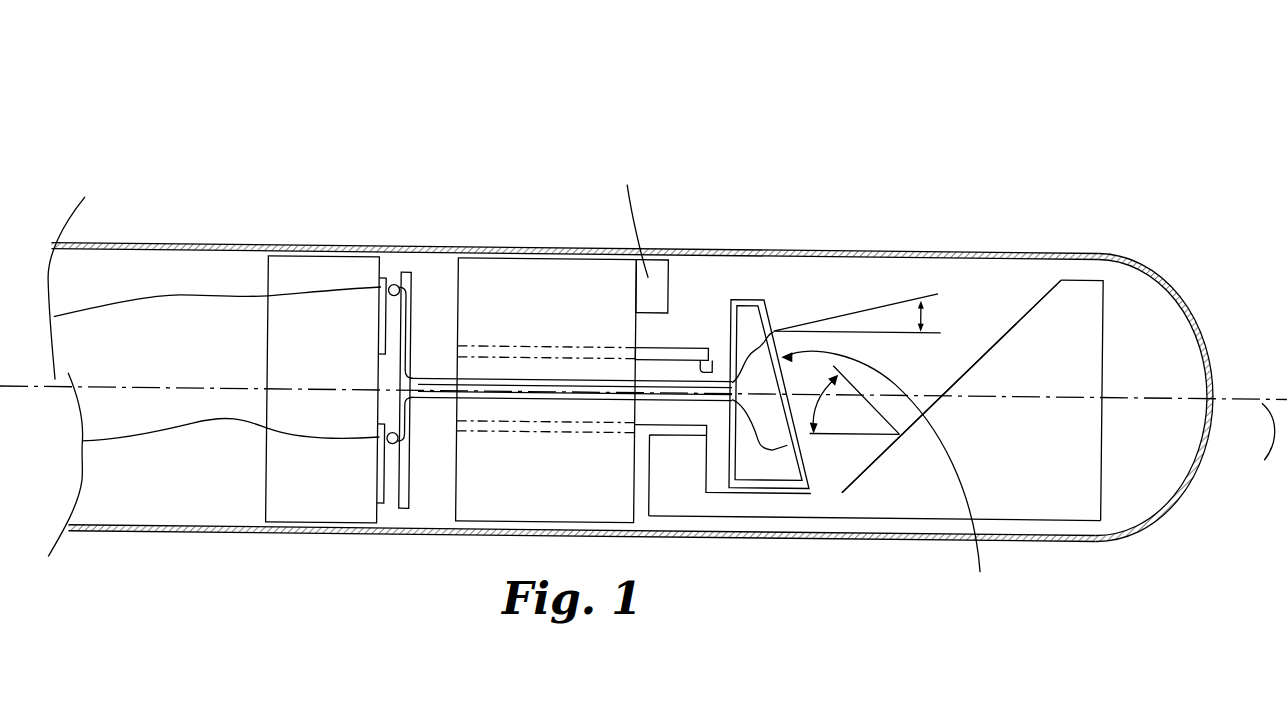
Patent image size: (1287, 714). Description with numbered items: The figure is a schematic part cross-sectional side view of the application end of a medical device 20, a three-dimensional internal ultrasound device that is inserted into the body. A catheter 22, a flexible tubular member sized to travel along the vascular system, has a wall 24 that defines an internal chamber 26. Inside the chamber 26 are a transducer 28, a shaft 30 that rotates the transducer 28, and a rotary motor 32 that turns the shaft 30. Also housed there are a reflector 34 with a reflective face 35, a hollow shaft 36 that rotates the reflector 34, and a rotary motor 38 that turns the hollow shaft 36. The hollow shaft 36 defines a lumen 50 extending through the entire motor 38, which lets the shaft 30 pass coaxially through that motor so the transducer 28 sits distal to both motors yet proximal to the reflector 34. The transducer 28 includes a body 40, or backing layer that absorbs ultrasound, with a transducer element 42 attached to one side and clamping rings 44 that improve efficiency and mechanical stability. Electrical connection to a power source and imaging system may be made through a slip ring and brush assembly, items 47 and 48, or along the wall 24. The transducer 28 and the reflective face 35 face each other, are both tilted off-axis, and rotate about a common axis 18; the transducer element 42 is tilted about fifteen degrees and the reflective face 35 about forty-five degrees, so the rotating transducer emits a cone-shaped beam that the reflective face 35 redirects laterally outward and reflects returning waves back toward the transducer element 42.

The common axis 18 is at (1277, 385).
The medical device 20 is at (534, 96).
The catheter 22 is at (433, 245).
The wall 24 is at (1170, 280).
The internal chamber 26 is at (835, 271).
The transducer 28 is at (889, 475).
The shaft 30 is at (441, 372).
The rotary motor 32 is at (285, 274).
The reflector 34 is at (1030, 461).
The reflective face 35 is at (1023, 304).
The hollow shaft 36 is at (683, 340).
The rotary motor 38 is at (517, 485).
The body 40 is at (765, 452).
The transducer element 42 is at (808, 453).
The clamping rings 44 is at (743, 467).
The slip ring 47 is at (408, 456).
The brush 48 is at (390, 272).
The lumen 50 is at (723, 355).